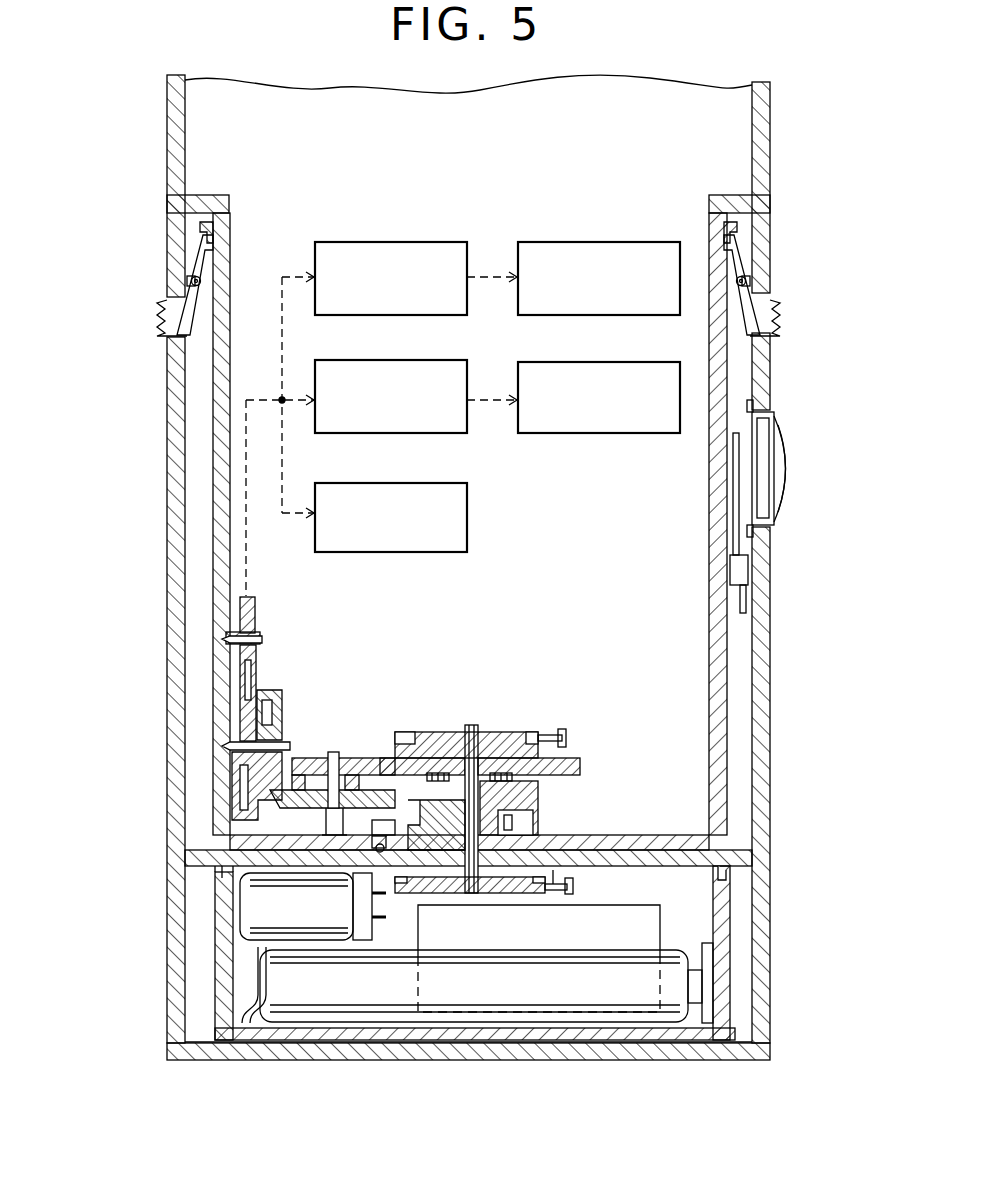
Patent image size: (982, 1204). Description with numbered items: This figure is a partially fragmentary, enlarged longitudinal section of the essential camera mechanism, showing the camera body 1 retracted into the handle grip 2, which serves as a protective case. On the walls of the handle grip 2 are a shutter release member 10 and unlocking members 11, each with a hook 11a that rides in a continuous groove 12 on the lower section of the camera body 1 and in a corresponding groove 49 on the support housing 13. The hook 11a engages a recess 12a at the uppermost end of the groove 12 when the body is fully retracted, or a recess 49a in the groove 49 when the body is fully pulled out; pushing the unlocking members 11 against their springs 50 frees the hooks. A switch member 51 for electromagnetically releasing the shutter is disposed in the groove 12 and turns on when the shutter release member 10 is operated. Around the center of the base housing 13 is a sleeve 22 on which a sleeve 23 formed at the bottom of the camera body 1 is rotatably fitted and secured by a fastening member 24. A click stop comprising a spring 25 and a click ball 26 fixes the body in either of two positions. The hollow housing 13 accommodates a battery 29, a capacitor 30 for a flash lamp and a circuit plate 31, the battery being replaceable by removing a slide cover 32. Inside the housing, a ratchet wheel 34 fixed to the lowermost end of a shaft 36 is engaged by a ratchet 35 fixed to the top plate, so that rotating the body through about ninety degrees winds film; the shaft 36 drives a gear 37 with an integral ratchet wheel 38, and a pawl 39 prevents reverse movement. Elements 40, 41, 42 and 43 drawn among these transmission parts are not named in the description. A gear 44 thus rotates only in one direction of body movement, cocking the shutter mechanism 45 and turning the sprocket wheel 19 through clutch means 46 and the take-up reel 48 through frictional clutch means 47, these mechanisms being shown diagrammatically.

The camera body 1 is at (158, 150).
The handle grip 2 is at (158, 923).
The shutter release member 10 is at (778, 458).
The unlocking member 11 is at (157, 305).
The hook 11a is at (232, 222).
The groove 12 is at (213, 540).
The recess 12a is at (710, 236).
The support housing 13 is at (222, 982).
The sprocket wheel 19 is at (618, 435).
The sleeve 22 is at (488, 745).
The sleeve 23 is at (505, 823).
The fastening member 24 is at (540, 800).
The spring 25 is at (375, 842).
The click ball 26 is at (420, 880).
The battery 29 is at (393, 1000).
The capacitor 30 is at (282, 925).
The circuit plate 31 is at (648, 928).
The slide cover 32 is at (597, 1032).
The ratchet wheel 34 is at (524, 882).
The ratchet 35 is at (575, 887).
The shaft 36 is at (468, 725).
The gear 37 is at (570, 760).
The ratchet wheel 38 is at (515, 732).
The pawl 39 is at (572, 737).
The plate 40 is at (358, 763).
The pin 41 is at (307, 790).
The bracket 42 is at (268, 787).
The lever 43 is at (243, 703).
The gear 44 is at (258, 619).
The shutter mechanism 45 is at (469, 518).
The clutch means 46 is at (466, 435).
The frictional clutch means 47 is at (410, 241).
The take-up reel 48 is at (593, 241).
The groove 49 is at (742, 985).
The recess 49a is at (725, 880).
The spring 50 is at (192, 278).
The switch member 51 is at (745, 568).